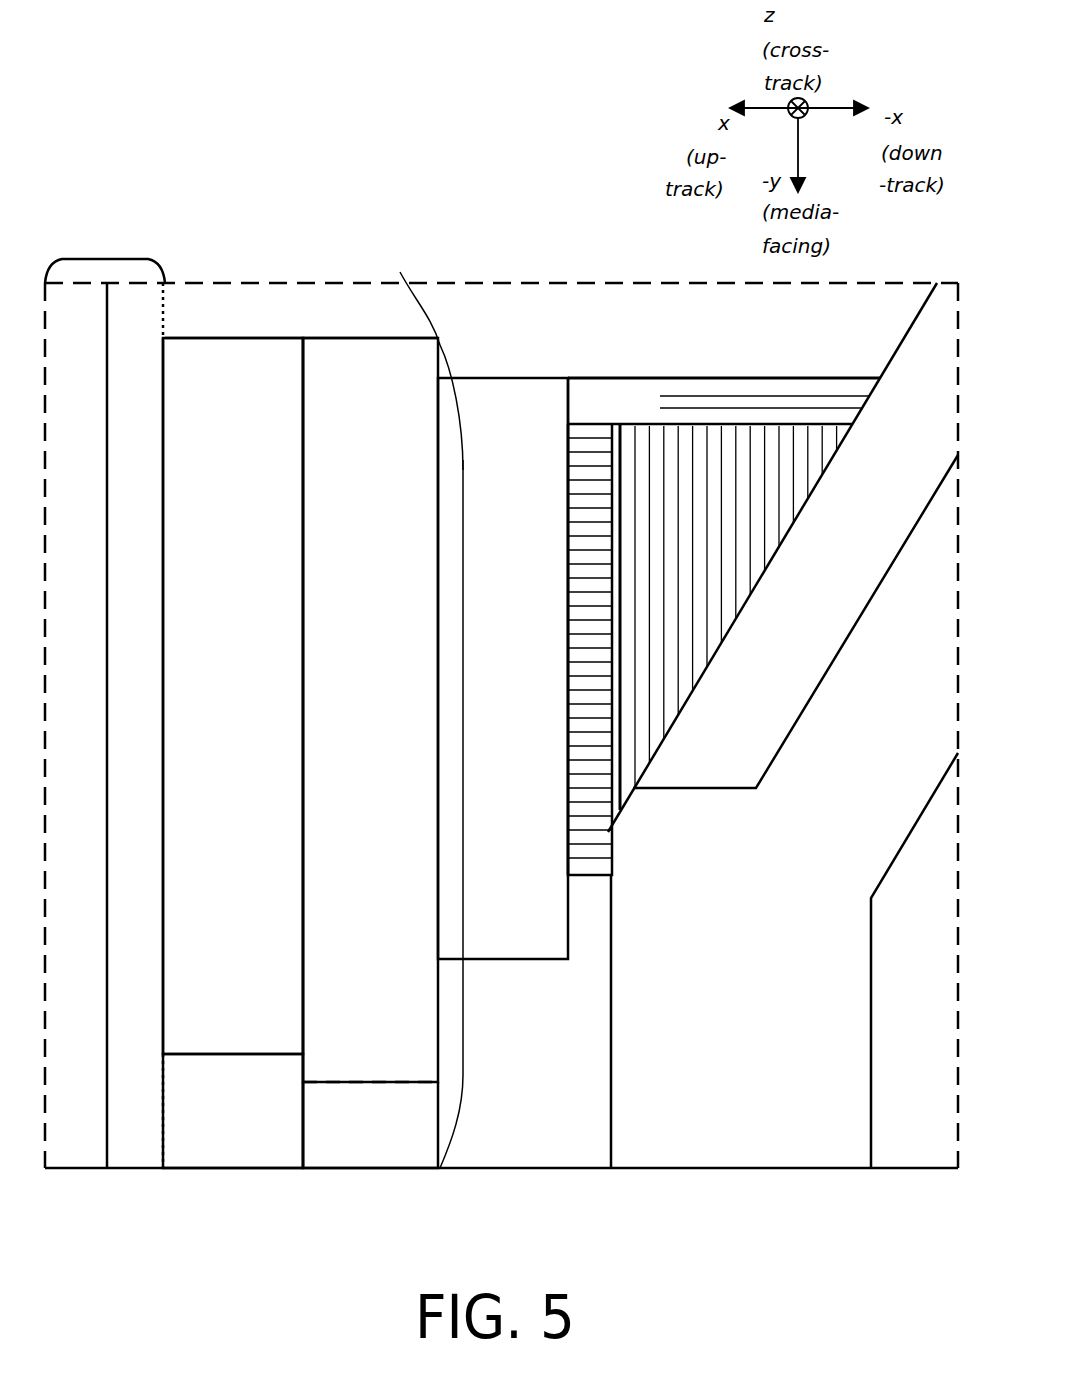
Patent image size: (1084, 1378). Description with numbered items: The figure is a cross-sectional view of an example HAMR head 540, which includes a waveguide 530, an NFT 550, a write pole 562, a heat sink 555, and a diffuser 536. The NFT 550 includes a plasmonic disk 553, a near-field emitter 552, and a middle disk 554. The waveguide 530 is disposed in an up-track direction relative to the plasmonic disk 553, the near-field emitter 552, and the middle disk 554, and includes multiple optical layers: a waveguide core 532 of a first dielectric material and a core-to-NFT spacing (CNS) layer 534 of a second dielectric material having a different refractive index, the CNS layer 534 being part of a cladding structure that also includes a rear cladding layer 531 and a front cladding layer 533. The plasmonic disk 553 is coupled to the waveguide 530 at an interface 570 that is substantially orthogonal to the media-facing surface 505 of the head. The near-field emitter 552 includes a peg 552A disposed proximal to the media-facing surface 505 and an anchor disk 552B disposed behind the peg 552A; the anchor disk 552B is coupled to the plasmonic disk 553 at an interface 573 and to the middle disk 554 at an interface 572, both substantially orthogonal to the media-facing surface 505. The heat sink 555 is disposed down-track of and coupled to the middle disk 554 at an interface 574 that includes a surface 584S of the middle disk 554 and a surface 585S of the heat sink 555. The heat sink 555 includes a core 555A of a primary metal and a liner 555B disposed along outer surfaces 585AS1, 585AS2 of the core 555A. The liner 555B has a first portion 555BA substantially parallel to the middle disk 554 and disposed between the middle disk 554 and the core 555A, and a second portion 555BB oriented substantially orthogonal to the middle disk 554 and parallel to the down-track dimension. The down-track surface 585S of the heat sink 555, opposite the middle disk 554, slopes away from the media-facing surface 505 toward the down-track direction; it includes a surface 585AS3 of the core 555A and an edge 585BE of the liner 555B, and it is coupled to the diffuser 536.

The media-facing surface 505 is at (183, 1168).
The waveguide 530 is at (105, 259).
The rear cladding layer 531 is at (258, 334).
The waveguide core 532 is at (100, 744).
The front cladding layer 533 is at (258, 1132).
The core-to-NFT spacing layer 534 is at (161, 744).
The diffuser 536 is at (748, 761).
The HAMR head 540 is at (420, 125).
The NFT 550 is at (474, 305).
The near-field emitter 552 is at (463, 807).
The peg 552A is at (405, 1146).
The anchor disk 552B is at (405, 666).
The plasmonic disk 553 is at (258, 714).
The middle disk 554 is at (528, 666).
The heat sink 555 is at (709, 336).
The core 555A is at (720, 604).
The liner 555B is at (650, 422).
The first portion of liner 555BA is at (592, 744).
The second portion of liner 555BB is at (747, 398).
The write pole 562 is at (763, 1052).
The interface 570 is at (164, 476).
The interface 572 is at (420, 353).
The interface 573 is at (303, 338).
The interface 574 is at (568, 378).
The surface of middle disk 584S is at (564, 504).
The surface of heat sink 585S is at (576, 556).
The outer surface of core 585AS1 is at (620, 548).
The outer surface of core 585AS2 is at (661, 431).
The surface of core 585AS3 is at (782, 521).
The edge of liner 585BE is at (857, 419).